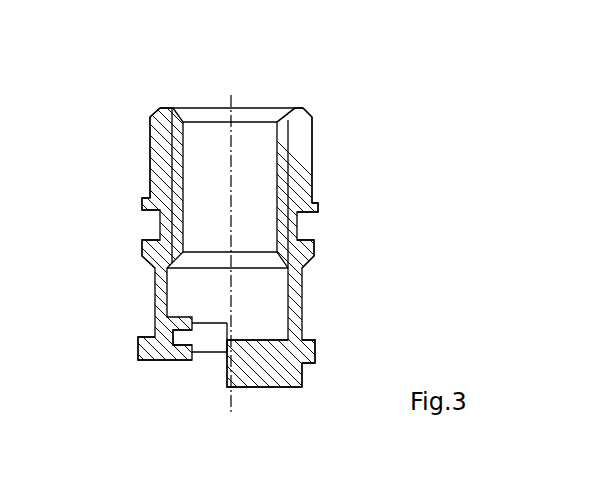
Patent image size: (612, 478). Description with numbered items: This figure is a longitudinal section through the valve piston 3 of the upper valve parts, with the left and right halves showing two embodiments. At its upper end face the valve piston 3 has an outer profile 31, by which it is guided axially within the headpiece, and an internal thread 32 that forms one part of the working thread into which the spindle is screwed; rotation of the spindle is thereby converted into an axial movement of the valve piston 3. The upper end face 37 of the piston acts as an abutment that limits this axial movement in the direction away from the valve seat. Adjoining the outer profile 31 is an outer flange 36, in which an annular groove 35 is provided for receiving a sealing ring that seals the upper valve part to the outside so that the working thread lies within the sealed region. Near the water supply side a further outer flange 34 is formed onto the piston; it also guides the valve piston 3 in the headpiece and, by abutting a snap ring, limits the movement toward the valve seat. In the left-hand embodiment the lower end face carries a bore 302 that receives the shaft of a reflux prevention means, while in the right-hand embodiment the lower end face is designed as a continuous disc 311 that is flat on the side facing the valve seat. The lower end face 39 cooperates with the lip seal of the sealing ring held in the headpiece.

The valve piston 3 is at (163, 185).
The outer profile 31 is at (150, 160).
The internal thread 32 is at (152, 127).
The end face 37 is at (298, 110).
The annular groove 35 is at (158, 225).
The outer flange 36 is at (145, 250).
The outer flange 34 is at (138, 348).
The bore 302 is at (210, 357).
The end face 39 is at (262, 387).
The continuous disc 311 is at (287, 377).